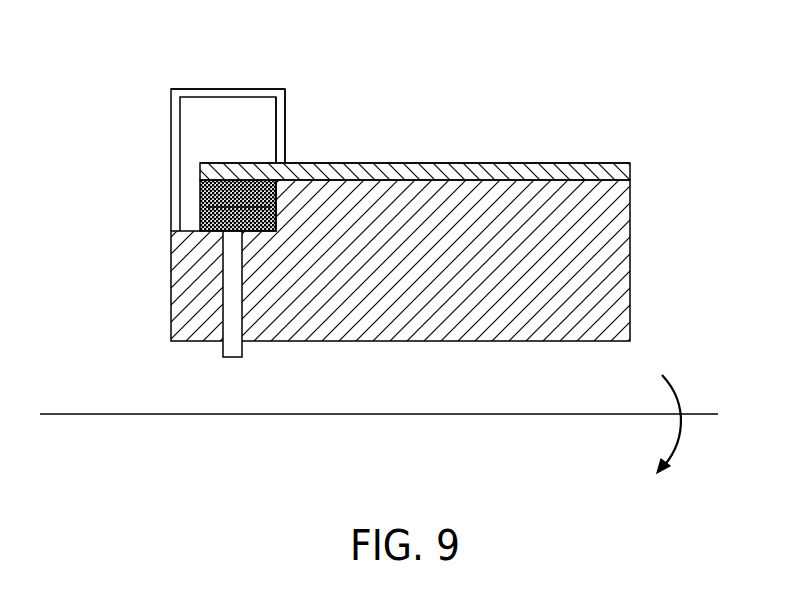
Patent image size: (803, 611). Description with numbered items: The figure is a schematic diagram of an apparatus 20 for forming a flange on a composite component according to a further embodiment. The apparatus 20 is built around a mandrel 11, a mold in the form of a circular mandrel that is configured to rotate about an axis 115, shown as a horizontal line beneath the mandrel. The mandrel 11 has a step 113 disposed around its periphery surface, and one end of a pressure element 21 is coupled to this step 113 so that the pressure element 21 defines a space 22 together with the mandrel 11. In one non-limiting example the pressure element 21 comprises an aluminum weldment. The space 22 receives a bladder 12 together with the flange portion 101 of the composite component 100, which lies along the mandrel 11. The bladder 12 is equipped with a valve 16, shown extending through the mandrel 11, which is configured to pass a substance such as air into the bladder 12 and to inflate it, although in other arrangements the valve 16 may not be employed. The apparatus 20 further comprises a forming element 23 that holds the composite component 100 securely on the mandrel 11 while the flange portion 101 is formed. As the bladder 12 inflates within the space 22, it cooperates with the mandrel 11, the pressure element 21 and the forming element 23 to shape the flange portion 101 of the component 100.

The mandrel 11 is at (620, 245).
The bladder 12 is at (202, 193).
The valve 16 is at (224, 352).
The apparatus 20 is at (168, 57).
The pressure element 21 is at (177, 150).
The space 22 is at (192, 119).
The forming element 23 is at (282, 113).
The composite component 100 is at (475, 168).
The flange portion 101 is at (220, 162).
The step 113 is at (188, 217).
The axis 115 is at (112, 414).